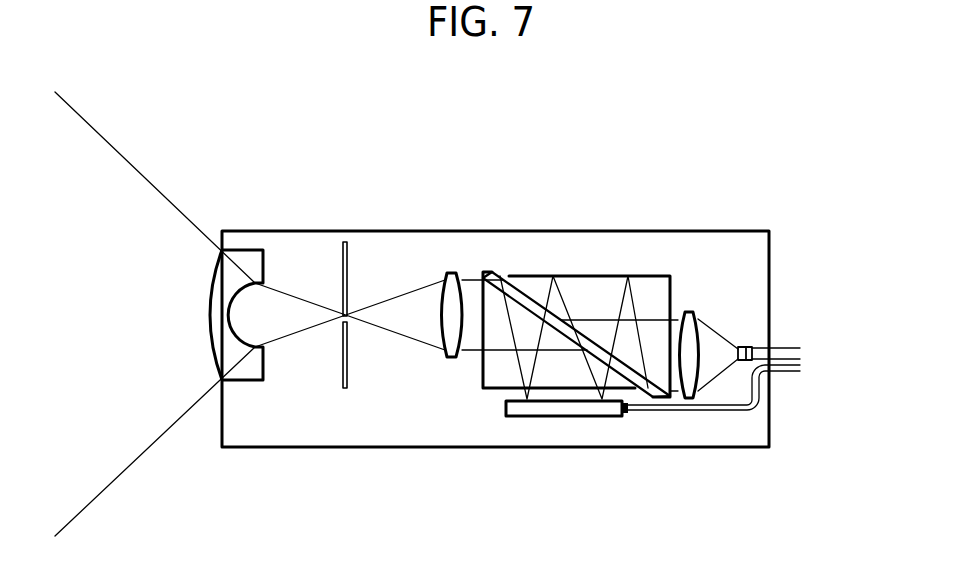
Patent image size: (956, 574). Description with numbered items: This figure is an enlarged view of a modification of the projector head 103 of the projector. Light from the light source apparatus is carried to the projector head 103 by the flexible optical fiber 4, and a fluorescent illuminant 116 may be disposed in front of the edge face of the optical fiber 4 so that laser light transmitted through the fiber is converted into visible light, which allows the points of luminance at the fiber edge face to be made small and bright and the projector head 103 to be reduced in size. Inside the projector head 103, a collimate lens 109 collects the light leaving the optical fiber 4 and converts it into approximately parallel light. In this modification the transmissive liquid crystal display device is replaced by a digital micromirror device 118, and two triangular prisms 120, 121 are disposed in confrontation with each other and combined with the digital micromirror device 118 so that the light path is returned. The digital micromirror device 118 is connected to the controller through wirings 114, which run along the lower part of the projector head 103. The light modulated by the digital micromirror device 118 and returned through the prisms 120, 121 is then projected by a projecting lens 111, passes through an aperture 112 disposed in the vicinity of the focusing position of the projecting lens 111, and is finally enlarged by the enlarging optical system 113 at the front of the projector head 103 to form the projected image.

The projector head 103 is at (522, 230).
The enlarging optical system 113 is at (242, 248).
The aperture 112 is at (342, 253).
The projecting lens 111 is at (450, 272).
The triangular prism 121 is at (490, 390).
The triangular prism 120 is at (603, 276).
The digital micromirror device 118 is at (565, 408).
The wirings 114 is at (710, 411).
The collimate lens 109 is at (692, 310).
The fluorescent illuminant 116 is at (747, 347).
The optical fiber 4 is at (790, 349).